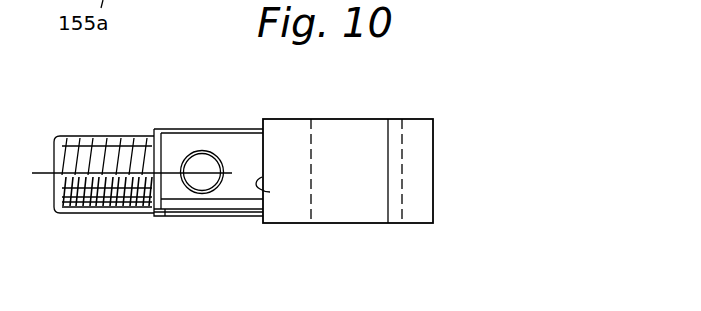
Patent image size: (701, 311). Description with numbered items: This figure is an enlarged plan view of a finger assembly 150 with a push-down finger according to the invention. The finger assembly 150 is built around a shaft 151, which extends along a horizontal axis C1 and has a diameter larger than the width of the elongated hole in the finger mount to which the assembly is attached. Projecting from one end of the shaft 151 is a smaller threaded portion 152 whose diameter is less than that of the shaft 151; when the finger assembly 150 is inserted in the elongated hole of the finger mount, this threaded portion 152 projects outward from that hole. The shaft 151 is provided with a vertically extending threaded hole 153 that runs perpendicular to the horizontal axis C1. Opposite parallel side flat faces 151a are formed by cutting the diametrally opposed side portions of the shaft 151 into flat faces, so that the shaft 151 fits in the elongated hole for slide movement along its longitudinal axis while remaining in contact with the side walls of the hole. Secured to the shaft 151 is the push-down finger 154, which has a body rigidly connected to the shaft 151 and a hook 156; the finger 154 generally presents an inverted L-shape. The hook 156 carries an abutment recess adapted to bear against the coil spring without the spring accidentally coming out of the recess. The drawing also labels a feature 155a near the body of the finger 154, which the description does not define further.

The finger assembly 150 is at (190, 128).
The shaft 151 is at (167, 218).
The side flat faces 151a is at (242, 127).
The threaded portion 152 is at (106, 134).
The threaded hole 153 is at (203, 194).
The push-down finger 154 is at (302, 119).
The passage 155a is at (270, 192).
The hook 156 is at (423, 117).
The horizontal axis C1 is at (42, 173).